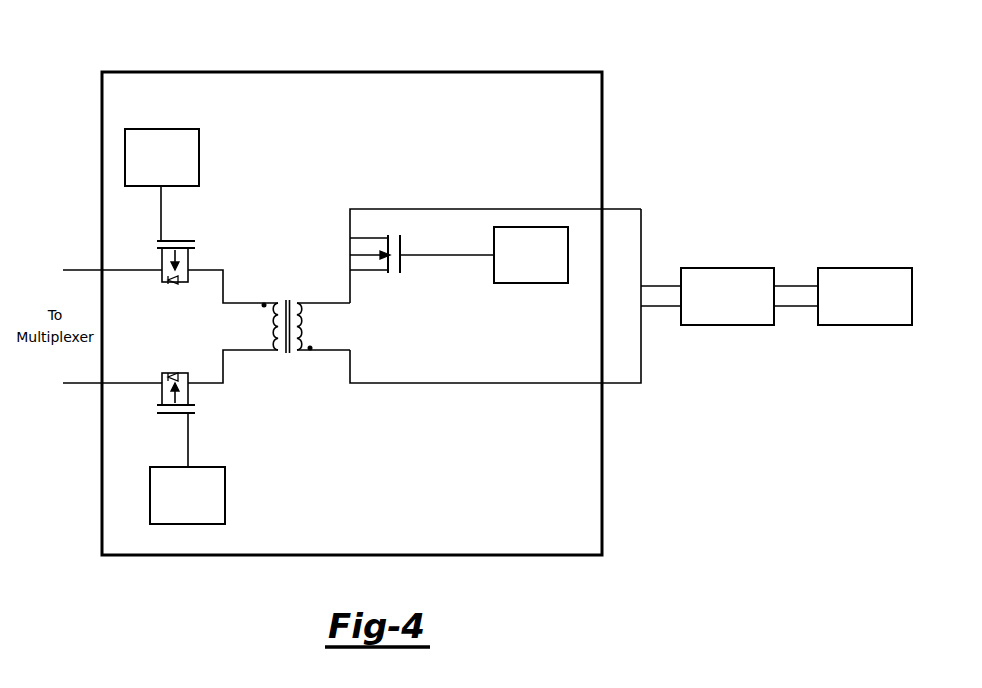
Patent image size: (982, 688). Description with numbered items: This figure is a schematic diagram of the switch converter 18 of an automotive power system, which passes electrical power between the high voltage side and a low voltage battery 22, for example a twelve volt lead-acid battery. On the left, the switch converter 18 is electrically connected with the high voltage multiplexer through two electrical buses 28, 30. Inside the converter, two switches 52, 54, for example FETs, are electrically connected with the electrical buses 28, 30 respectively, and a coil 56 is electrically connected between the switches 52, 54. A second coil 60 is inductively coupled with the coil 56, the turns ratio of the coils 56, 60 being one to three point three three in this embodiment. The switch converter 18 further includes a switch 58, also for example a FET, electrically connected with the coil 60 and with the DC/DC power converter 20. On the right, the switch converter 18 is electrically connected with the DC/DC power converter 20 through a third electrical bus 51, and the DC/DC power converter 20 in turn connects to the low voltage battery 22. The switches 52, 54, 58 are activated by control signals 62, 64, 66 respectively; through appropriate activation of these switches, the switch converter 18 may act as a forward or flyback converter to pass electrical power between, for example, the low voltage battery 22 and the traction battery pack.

The switch converter 18 is at (352, 72).
The DC/DC power converter 20 is at (729, 268).
The low voltage battery 22 is at (866, 268).
The electrical bus 28 is at (82, 270).
The electrical bus 30 is at (83, 383).
The third electrical bus 51 is at (641, 232).
The switch 52 is at (188, 262).
The switch 54 is at (188, 392).
The coil 56 is at (264, 302).
The switch 58 is at (370, 272).
The coil 60 is at (310, 352).
The control signal 62 is at (168, 129).
The control signal 64 is at (225, 497).
The control signal 66 is at (528, 283).